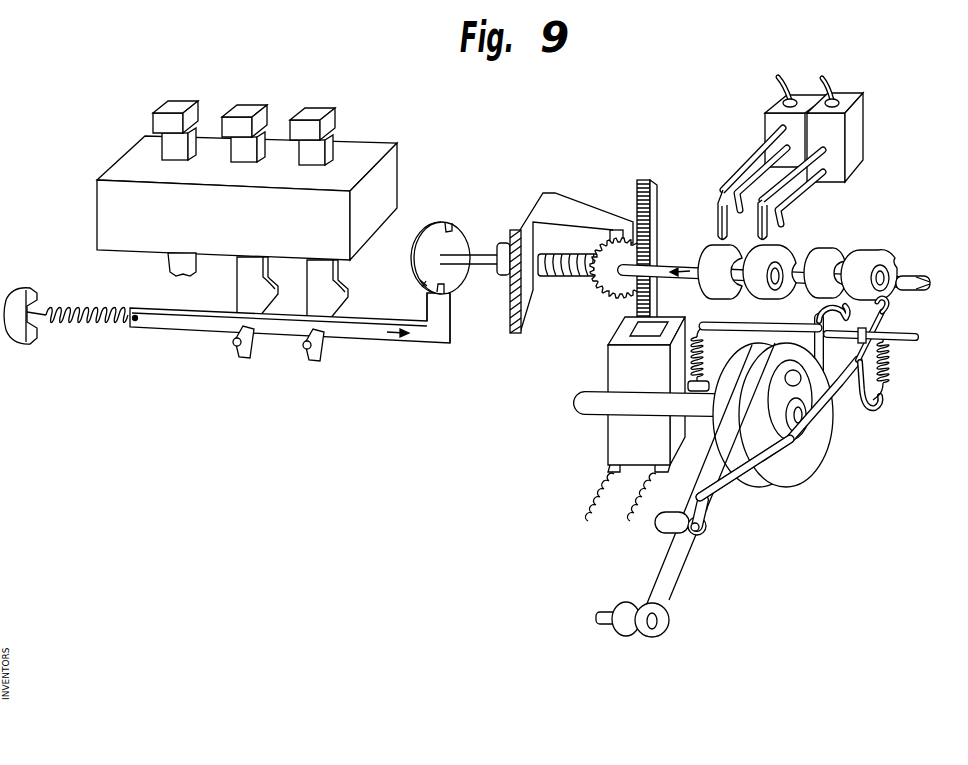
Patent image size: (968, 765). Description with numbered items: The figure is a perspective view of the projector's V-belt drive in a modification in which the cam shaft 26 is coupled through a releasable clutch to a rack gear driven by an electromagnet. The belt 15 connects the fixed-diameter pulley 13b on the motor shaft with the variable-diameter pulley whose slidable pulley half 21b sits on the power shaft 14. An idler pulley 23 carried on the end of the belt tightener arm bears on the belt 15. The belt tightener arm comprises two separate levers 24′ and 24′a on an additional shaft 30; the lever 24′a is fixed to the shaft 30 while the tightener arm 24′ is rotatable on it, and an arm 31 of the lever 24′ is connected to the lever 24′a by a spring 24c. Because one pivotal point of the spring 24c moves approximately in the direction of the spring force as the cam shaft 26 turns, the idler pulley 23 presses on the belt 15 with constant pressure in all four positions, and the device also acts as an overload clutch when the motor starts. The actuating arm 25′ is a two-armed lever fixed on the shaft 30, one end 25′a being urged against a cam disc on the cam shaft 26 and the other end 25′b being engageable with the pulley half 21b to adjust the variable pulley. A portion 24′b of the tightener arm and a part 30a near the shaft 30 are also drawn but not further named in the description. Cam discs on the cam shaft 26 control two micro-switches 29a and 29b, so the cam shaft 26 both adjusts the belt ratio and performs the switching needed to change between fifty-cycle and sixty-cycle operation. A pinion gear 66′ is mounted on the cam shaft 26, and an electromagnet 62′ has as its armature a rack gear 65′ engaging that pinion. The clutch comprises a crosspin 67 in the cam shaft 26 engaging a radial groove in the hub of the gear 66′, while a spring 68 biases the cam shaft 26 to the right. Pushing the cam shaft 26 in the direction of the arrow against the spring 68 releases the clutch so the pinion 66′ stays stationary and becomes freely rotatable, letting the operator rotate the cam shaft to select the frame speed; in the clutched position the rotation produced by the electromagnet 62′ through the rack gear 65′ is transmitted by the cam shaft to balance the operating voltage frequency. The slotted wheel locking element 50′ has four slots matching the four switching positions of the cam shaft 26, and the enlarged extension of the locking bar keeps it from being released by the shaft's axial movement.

The fixed-diameter pulley 13b is at (662, 630).
The power shaft 14 is at (590, 400).
The belt 15 is at (655, 568).
The pulley half 21b is at (813, 453).
The idler pulley 23 is at (665, 521).
The belt tightener arm 24′ is at (819, 445).
The lever 24′a is at (889, 312).
The lever arm 24′b is at (728, 497).
The spring 24c is at (890, 362).
The actuating arm 25′ is at (817, 362).
The end of actuating arm 25′a is at (838, 314).
The follower bar 25′b is at (840, 402).
The cam shaft 26 is at (663, 265).
The micro-switch 29a is at (768, 125).
The micro-switch 29b is at (853, 122).
The additional shaft 30 is at (903, 339).
The spring 30a is at (690, 362).
The arm 31 is at (882, 405).
The slotted wheel locking element 50′ is at (445, 232).
The electromagnet 62′ is at (628, 437).
The rack gear 65′ is at (658, 204).
The pinion gear 66′ is at (620, 298).
The crosspin 67 is at (598, 272).
The spring 68 is at (560, 280).